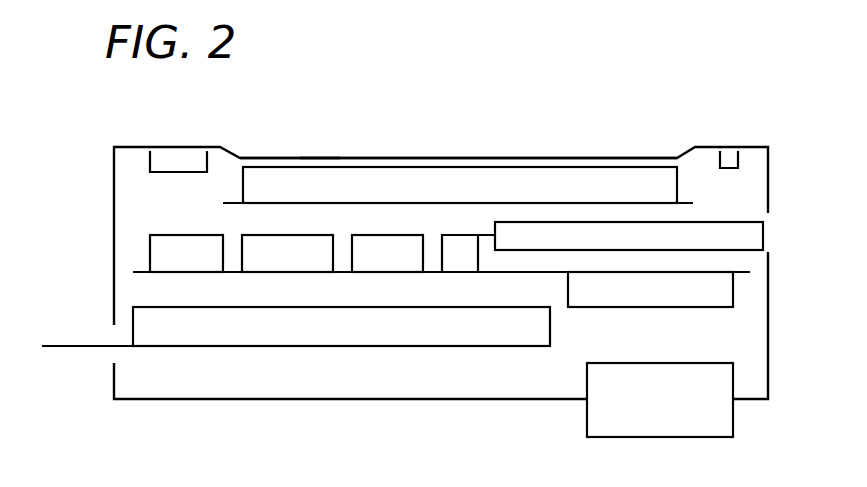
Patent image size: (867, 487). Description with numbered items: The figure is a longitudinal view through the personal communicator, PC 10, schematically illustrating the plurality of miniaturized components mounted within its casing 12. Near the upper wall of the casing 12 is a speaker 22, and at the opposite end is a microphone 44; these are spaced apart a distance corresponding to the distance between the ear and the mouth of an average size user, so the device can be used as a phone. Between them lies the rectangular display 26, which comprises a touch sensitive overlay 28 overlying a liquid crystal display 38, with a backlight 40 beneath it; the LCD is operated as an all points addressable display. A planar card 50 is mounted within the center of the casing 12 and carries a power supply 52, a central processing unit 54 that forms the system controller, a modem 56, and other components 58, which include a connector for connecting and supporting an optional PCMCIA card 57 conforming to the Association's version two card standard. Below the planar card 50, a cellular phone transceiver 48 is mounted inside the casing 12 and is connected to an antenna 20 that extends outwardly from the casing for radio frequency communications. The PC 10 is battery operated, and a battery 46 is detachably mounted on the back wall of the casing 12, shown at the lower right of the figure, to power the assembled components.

The personal communicator 10 is at (106, 133).
The casing 12 is at (112, 222).
The antenna 20 is at (78, 346).
The speaker 22 is at (193, 163).
The display 26 is at (565, 155).
The touch sensitive overlay 28 is at (321, 158).
The liquid crystal display 38 is at (338, 178).
The backlight 40 is at (234, 203).
The microphone 44 is at (723, 168).
The battery 46 is at (609, 438).
The cellular phone transceiver 48 is at (248, 347).
The planar card 50 is at (352, 307).
The power supply 52 is at (640, 308).
The central processing unit 54 is at (307, 235).
The modem 56 is at (172, 236).
The PCMCIA card 57 is at (763, 236).
The other components 58 is at (470, 235).